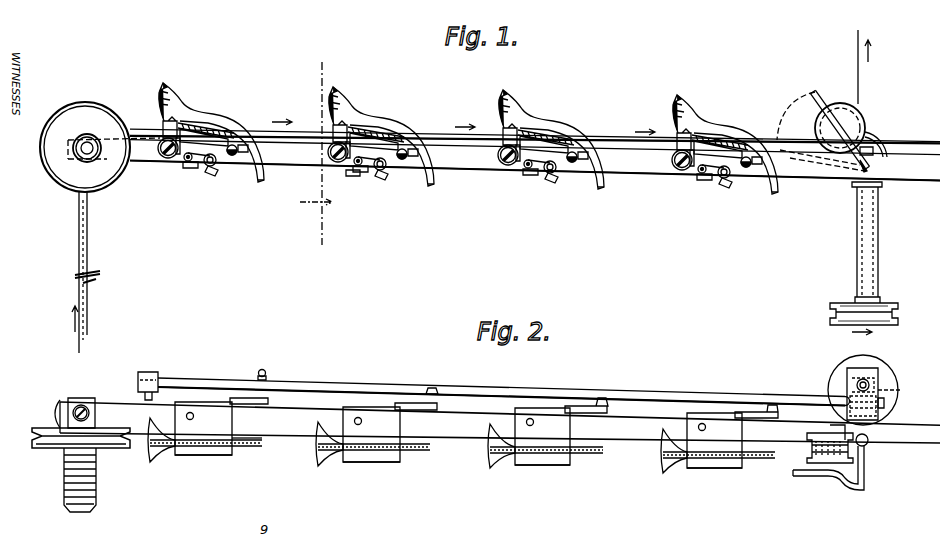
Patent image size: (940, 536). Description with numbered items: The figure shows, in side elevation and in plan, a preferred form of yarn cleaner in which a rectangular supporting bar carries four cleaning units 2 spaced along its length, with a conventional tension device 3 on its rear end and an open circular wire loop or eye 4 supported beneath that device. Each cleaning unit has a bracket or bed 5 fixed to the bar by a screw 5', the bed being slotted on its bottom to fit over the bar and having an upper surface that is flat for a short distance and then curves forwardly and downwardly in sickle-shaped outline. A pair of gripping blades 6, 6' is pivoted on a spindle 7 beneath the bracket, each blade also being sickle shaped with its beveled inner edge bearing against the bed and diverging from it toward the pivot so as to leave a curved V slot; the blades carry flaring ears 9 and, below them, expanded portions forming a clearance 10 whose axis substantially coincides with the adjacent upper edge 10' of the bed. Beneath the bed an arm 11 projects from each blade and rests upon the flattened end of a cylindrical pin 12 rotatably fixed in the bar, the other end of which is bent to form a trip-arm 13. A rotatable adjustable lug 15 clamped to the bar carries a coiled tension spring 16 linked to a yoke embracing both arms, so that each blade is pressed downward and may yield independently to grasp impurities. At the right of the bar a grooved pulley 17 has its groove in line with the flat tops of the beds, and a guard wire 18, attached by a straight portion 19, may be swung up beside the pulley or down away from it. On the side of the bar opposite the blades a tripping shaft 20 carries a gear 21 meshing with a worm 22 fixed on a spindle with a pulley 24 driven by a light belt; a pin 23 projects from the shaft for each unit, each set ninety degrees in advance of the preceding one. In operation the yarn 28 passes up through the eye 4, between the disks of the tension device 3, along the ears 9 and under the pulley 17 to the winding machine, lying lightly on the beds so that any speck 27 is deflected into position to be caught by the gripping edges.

In FIG. 1, the cleaning unit 2 is at (726, 127).
In FIG. 2, the cleaning unit 2 is at (725, 469).
In FIG. 1, the tension device 3 is at (100, 147).
In FIG. 2, the tension device 3 is at (58, 448).
In FIG. 1, the wire loop or eye 4 is at (62, 290).
In FIG. 1, the bracket or bed 5 is at (477, 132).
In FIG. 2, the bracket or bed 5 is at (458, 435).
In FIG. 1, the screw 5' is at (353, 185).
In FIG. 1, the gripping blade 6 is at (523, 192).
In FIG. 2, the gripping blade 6 is at (462, 458).
In FIG. 2, the gripping blade 6' is at (257, 424).
In FIG. 1, the spindle 7 is at (678, 172).
In FIG. 1, the ears 9 is at (678, 101).
In FIG. 2, the ears 9 is at (667, 468).
In FIG. 1, the clearance 10 is at (411, 125).
In FIG. 1, the upper edge of bed 10' is at (434, 174).
In FIG. 1, the arm 11 is at (572, 161).
In FIG. 1, the cylindrical pin 12 is at (414, 160).
In FIG. 2, the trip-arm 13 is at (240, 398).
In FIG. 1, the adjustable lug 15 is at (724, 178).
In FIG. 1, the coiled tension spring 16 is at (529, 172).
In FIG. 1, the grooved pulley 17 is at (855, 117).
In FIG. 2, the grooved pulley 17 is at (810, 460).
In FIG. 1, the guard wire 18 is at (818, 95).
In FIG. 2, the straight portion 19 is at (866, 466).
In FIG. 2, the tripping shaft 20 is at (690, 396).
In FIG. 2, the gear 21 is at (886, 394).
In FIG. 2, the worm 22 is at (880, 374).
In FIG. 2, the pin 23 is at (777, 405).
In FIG. 1, the pulley 24 is at (831, 314).
In FIG. 2, the pulley 24 is at (852, 362).
In FIG. 1, the speck 27 is at (78, 225).
In FIG. 1, the yarn 28 is at (80, 240).